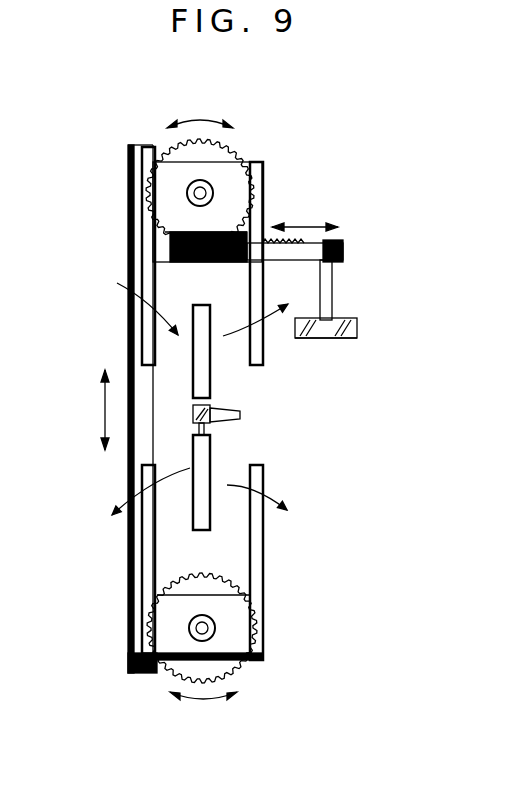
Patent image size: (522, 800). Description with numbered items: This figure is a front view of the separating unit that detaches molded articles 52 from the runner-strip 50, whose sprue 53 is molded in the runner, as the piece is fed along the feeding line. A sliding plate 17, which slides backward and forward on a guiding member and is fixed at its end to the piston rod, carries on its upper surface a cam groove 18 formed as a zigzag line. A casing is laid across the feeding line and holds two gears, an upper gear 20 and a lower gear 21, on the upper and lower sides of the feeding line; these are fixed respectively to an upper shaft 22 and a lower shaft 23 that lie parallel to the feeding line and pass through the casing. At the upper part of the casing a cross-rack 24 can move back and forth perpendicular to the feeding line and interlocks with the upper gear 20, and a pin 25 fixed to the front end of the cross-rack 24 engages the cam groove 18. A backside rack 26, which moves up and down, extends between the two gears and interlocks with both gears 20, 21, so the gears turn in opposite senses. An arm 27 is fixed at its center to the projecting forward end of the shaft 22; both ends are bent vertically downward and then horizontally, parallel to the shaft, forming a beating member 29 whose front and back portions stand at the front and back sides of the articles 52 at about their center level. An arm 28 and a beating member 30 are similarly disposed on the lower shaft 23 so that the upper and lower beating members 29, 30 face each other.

The sliding plate 17 is at (340, 338).
The cam groove 18 is at (318, 318).
The upper gear 20 is at (228, 145).
The lower gear 21 is at (237, 672).
The upper shaft 22 is at (216, 195).
The lower shaft 23 is at (217, 628).
The cross-rack 24 is at (343, 250).
The pin 25 is at (332, 290).
The backside rack 26 is at (131, 370).
The arm 27 is at (170, 197).
The arm 28 is at (170, 622).
The beating member 29 is at (143, 262).
The beating member 30 is at (143, 543).
The runner-strip 50 is at (210, 430).
The articles 52 is at (150, 285).
The sprue 53 is at (240, 412).